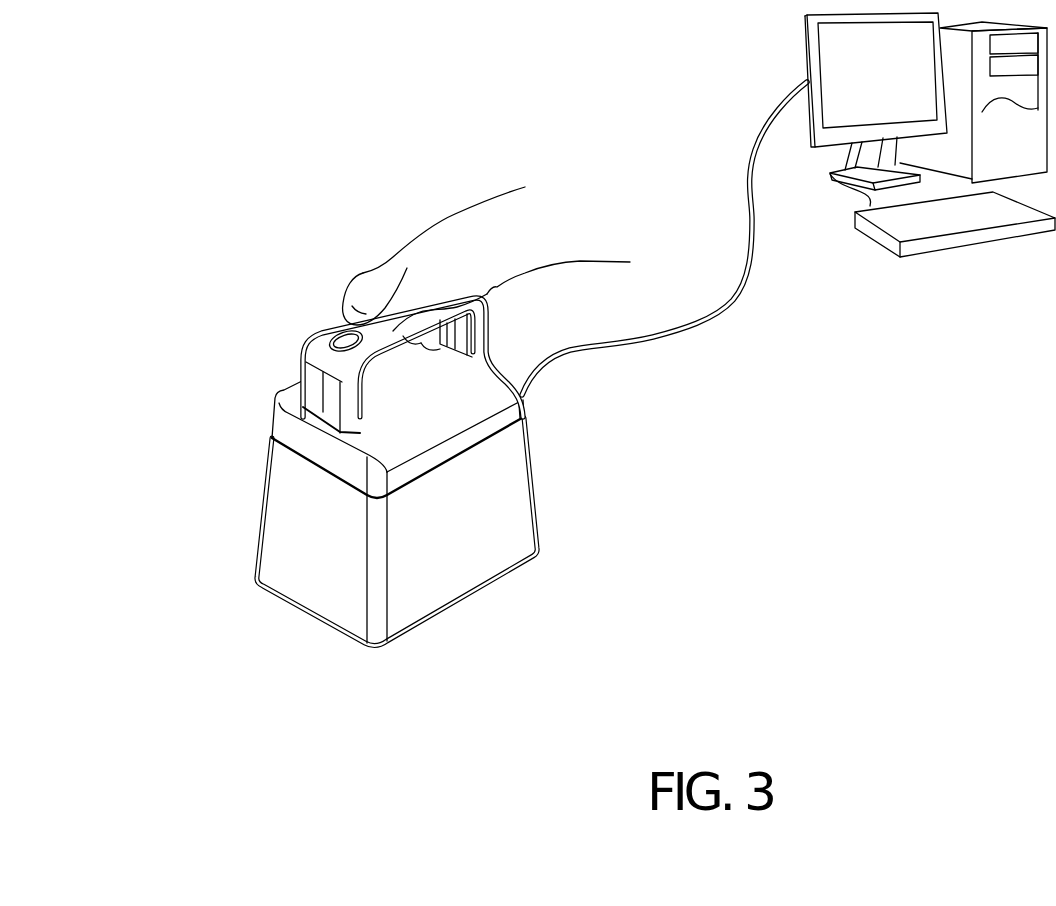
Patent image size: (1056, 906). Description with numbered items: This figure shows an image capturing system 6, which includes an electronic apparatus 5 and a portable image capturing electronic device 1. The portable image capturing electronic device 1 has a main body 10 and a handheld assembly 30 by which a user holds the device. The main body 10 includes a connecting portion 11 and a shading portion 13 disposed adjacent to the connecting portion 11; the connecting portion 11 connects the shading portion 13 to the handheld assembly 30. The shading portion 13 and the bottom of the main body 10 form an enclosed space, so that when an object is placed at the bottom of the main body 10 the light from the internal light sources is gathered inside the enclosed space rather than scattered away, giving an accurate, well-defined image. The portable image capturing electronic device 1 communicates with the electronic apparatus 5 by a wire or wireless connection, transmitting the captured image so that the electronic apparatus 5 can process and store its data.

The image capturing system 6 is at (252, 95).
The portable image capturing electronic device 1 is at (273, 293).
The electronic apparatus 5 is at (766, 59).
The main body 10 is at (627, 387).
The connecting portion 11 is at (500, 410).
The shading portion 13 is at (498, 508).
The handheld assembly 30 is at (303, 356).